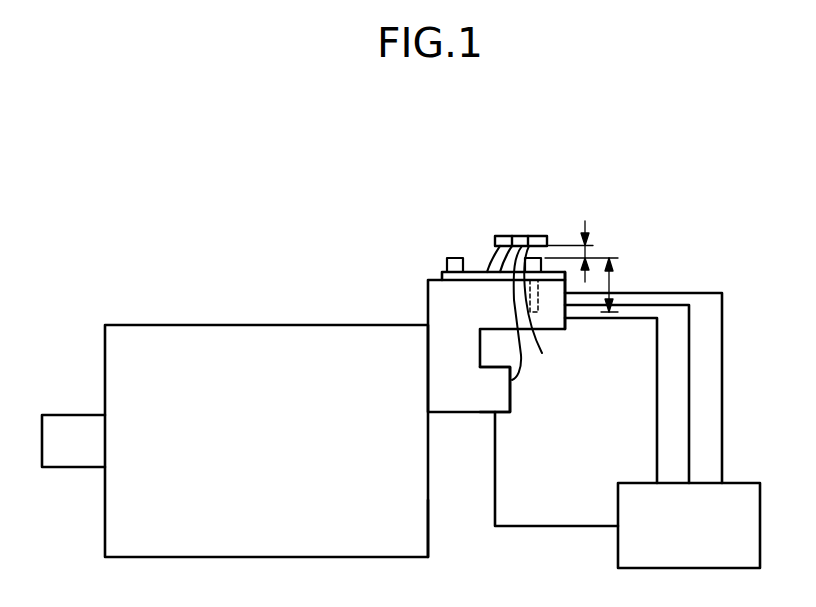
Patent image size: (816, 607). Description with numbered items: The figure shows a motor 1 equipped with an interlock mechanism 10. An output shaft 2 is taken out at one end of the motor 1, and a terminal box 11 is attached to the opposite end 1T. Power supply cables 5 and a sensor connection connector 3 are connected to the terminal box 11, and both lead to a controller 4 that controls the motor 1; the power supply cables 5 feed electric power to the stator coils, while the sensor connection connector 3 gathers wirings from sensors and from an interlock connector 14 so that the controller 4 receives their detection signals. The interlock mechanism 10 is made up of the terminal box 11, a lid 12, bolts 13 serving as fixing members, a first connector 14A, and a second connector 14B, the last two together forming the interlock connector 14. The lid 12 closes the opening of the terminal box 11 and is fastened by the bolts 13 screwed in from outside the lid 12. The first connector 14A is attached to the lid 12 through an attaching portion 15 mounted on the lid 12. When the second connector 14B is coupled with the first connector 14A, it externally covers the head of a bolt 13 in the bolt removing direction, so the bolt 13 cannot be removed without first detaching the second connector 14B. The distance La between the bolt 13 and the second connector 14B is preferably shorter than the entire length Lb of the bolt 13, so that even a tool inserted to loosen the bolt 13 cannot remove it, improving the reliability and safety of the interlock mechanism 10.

The motor 1 is at (127, 284).
The output shaft 2 is at (71, 461).
The end 1T is at (429, 534).
The sensor connection connector 3 is at (503, 395).
The controller 4 is at (741, 483).
The power supply cables 5 is at (657, 389).
The interlock mechanism 10 is at (592, 223).
The terminal box 11 is at (430, 302).
The lid 12 is at (443, 277).
The bolts 13 is at (452, 258).
The interlock connector 14 is at (520, 183).
The first connector 14A is at (508, 237).
The second connector 14B is at (545, 207).
The attaching portion 15 is at (495, 257).
The distance La is at (593, 247).
The entire length of the bolt Lb is at (622, 285).